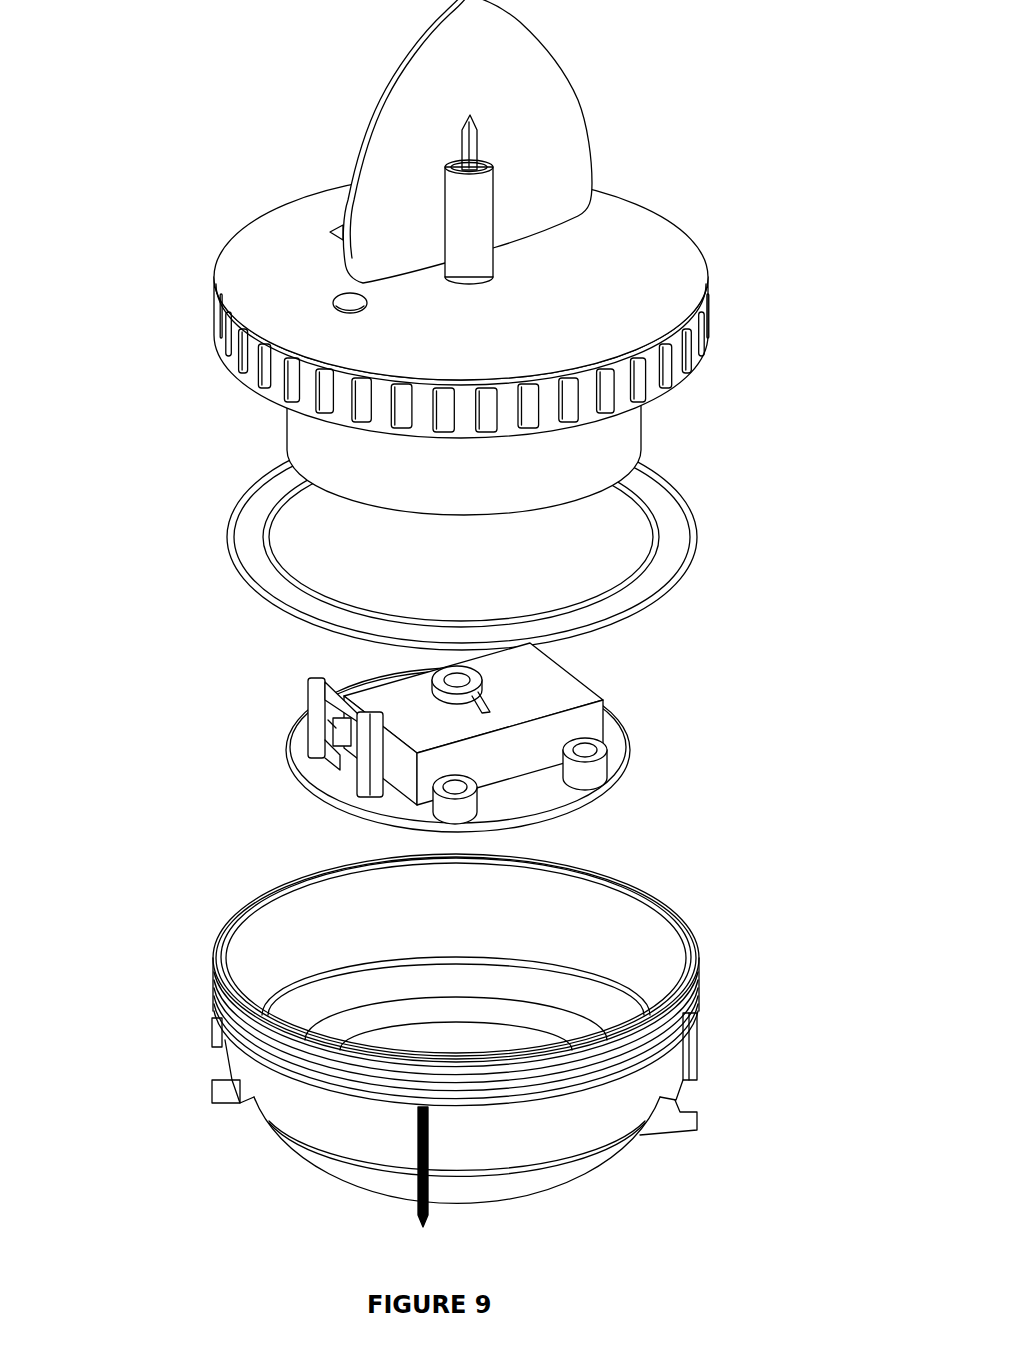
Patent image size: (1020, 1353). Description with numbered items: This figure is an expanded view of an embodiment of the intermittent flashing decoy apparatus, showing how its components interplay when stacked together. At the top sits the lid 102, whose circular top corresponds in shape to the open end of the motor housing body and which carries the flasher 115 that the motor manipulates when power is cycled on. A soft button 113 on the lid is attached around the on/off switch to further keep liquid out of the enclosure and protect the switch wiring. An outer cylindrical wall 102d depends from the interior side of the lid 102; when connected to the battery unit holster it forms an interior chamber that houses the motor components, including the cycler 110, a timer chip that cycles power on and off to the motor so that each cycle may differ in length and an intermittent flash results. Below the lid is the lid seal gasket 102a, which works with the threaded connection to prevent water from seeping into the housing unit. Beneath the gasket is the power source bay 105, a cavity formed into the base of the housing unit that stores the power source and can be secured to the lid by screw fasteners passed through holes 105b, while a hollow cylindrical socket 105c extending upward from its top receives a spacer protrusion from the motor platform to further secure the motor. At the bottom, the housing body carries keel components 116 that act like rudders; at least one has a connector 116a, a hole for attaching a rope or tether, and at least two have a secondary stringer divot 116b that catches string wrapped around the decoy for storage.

The lid 102 is at (705, 285).
The lid seal gasket 102a is at (690, 519).
The outer cylindrical wall 102d is at (285, 428).
The power source bay 105 is at (623, 773).
The holes 105b is at (600, 748).
The hollow cylindrical socket 105c is at (430, 683).
The cycler 110 is at (313, 735).
The soft button 113 is at (340, 300).
The flasher 115 is at (540, 98).
The keel components 116 is at (210, 1092).
The connector 116a is at (657, 1118).
The secondary stringer divot 116b is at (690, 1050).